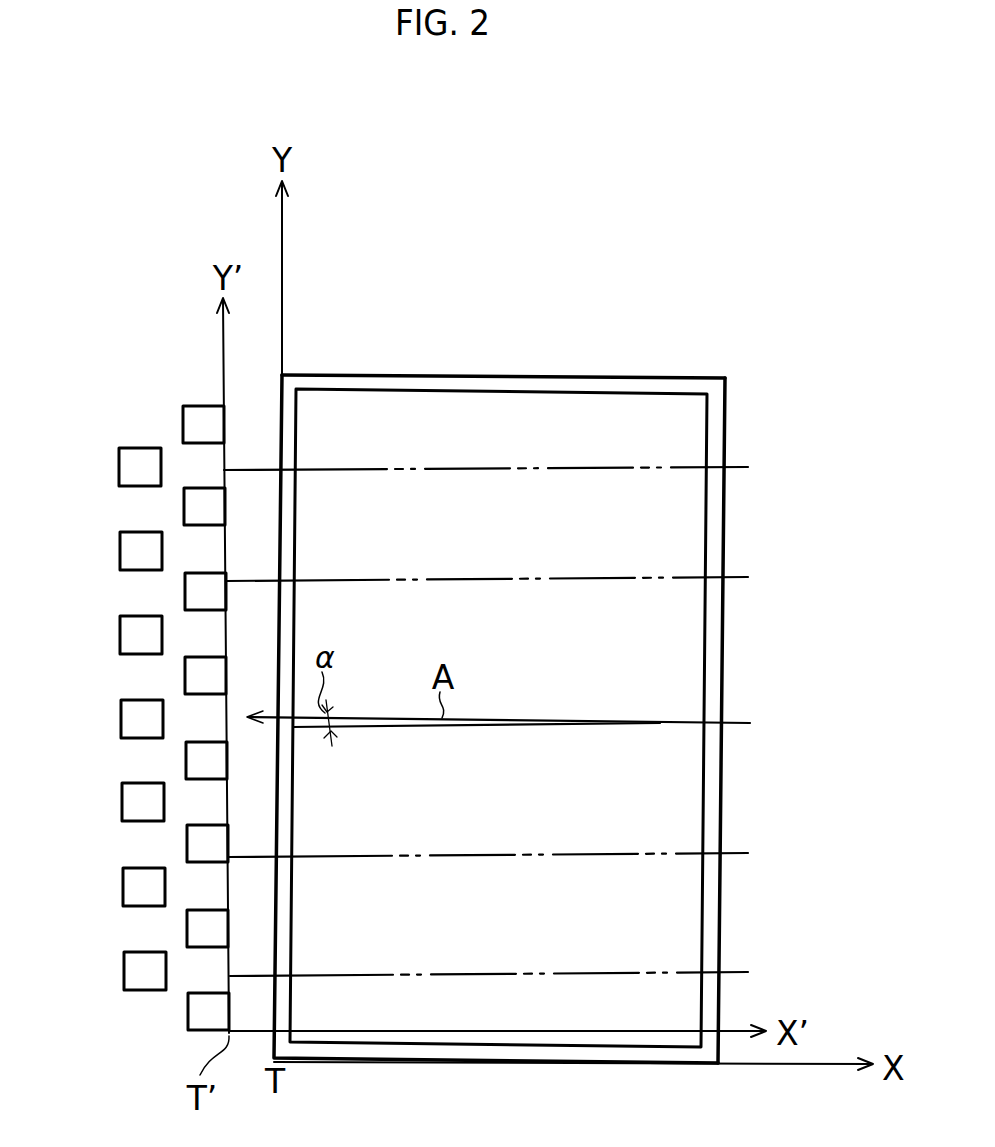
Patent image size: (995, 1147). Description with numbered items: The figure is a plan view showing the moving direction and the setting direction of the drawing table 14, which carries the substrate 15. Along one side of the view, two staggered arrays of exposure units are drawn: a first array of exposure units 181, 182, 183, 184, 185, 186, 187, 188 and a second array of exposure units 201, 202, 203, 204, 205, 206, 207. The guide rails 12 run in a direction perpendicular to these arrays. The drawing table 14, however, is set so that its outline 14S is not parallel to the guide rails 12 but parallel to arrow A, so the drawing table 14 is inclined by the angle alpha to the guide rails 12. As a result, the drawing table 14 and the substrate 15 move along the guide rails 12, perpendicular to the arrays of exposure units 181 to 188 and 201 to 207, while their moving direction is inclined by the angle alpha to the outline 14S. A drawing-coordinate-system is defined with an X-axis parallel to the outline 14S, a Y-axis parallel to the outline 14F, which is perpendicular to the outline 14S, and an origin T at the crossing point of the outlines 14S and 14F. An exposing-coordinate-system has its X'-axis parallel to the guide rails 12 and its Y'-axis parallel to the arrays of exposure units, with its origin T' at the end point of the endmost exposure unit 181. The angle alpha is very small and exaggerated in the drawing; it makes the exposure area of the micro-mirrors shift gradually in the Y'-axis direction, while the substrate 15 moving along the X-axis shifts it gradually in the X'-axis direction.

The guide rails 12 is at (736, 466).
The drawing table 14 is at (564, 663).
The outline 14S is at (402, 375).
The outline 14F is at (722, 766).
The substrate 15 is at (526, 390).
The exposure unit 181 is at (188, 1010).
The exposure unit 182 is at (187, 927).
The exposure unit 183 is at (187, 842).
The exposure unit 184 is at (186, 759).
The exposure unit 185 is at (185, 674).
The exposure unit 186 is at (185, 590).
The exposure unit 187 is at (184, 505).
The exposure unit 188 is at (183, 423).
The exposure unit 201 is at (124, 967).
The exposure unit 202 is at (123, 883).
The exposure unit 203 is at (122, 798).
The exposure unit 204 is at (121, 715).
The exposure unit 205 is at (120, 631).
The exposure unit 206 is at (120, 547).
The exposure unit 207 is at (119, 463).